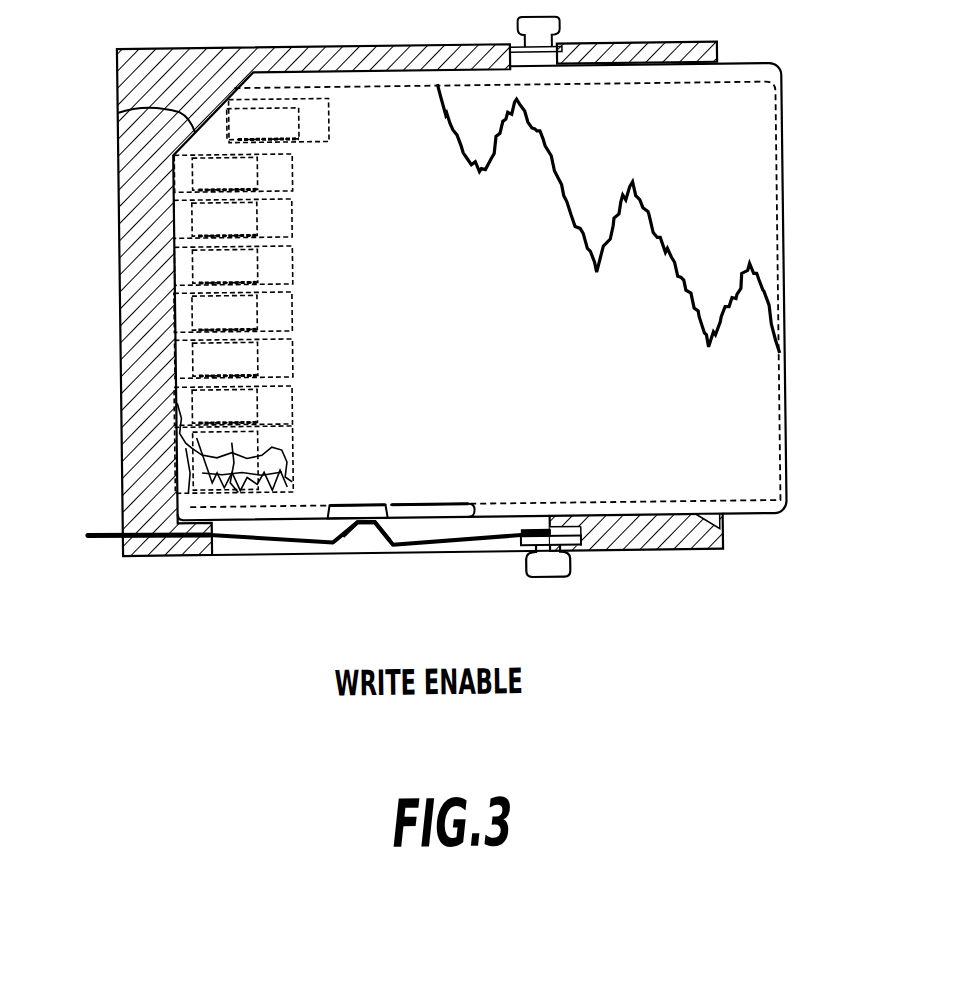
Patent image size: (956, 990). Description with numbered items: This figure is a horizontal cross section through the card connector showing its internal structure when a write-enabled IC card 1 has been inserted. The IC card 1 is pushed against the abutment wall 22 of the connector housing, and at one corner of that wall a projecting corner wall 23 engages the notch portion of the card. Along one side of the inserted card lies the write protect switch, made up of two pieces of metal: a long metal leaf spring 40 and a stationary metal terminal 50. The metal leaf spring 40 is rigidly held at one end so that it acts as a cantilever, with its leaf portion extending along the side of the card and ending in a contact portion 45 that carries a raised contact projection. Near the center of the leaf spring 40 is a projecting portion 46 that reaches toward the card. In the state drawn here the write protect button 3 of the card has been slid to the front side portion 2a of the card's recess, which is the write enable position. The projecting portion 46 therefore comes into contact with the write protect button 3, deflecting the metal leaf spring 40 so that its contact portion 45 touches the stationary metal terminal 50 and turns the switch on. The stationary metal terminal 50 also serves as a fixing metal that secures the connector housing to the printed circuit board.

The IC card 1 is at (761, 179).
The front side portion of the recess 2a is at (326, 502).
The write protect button 3 is at (360, 502).
The abutment wall 22 is at (175, 257).
The projecting corner wall 23 is at (120, 109).
The metal leaf spring 40 is at (469, 503).
The contact portion 45 is at (524, 503).
The projecting portion 46 is at (389, 502).
The stationary metal terminal 50 is at (540, 563).